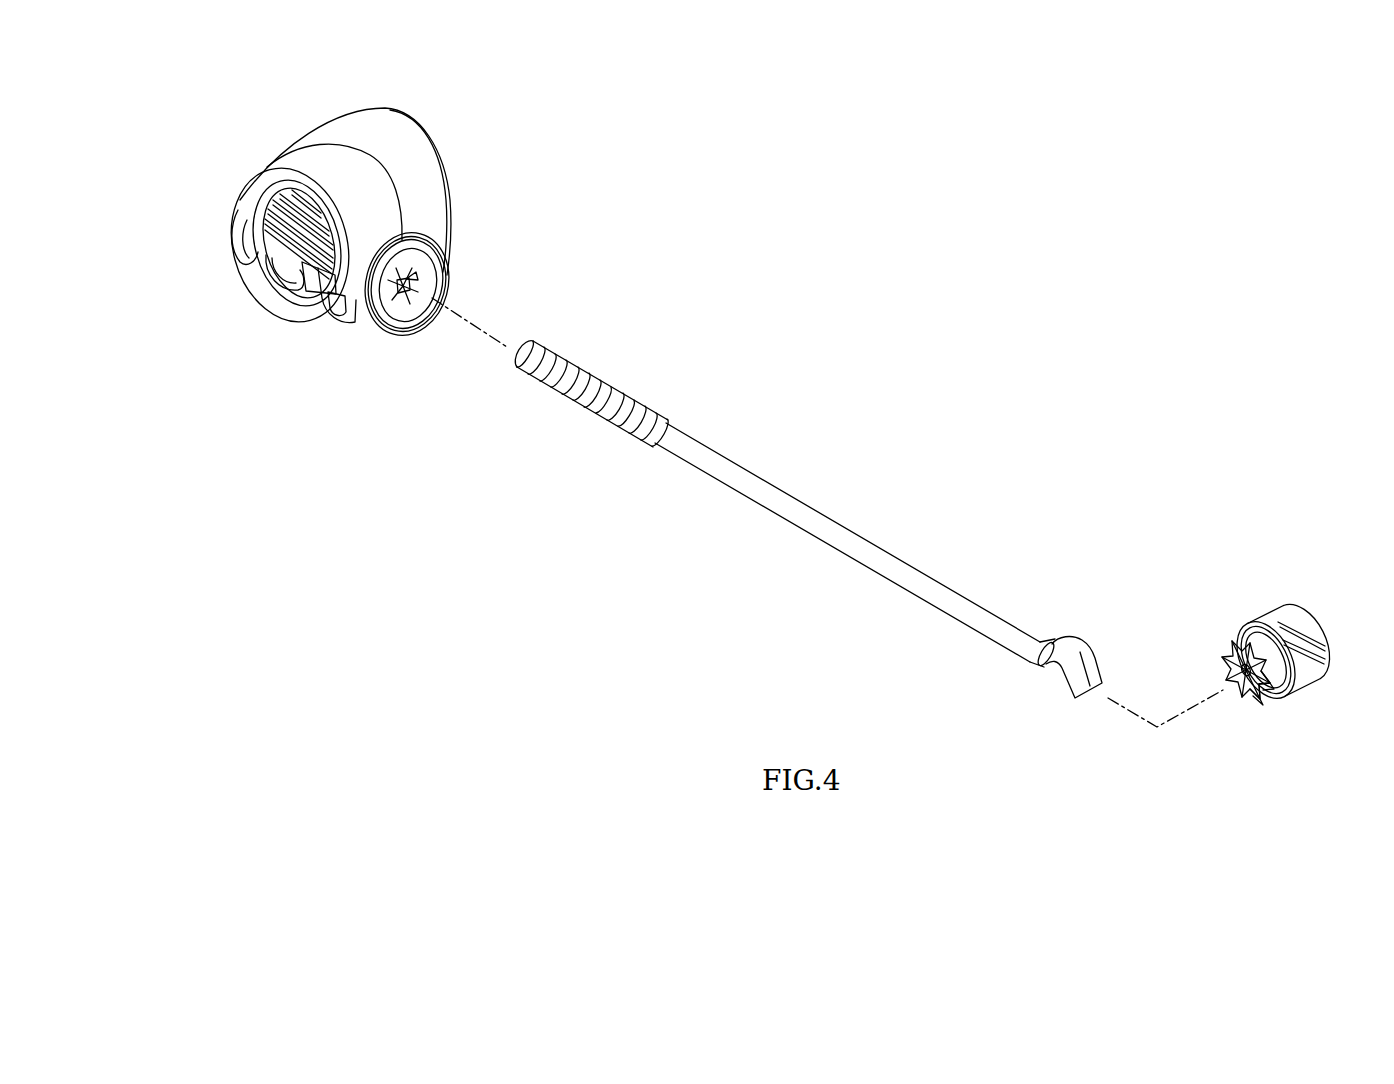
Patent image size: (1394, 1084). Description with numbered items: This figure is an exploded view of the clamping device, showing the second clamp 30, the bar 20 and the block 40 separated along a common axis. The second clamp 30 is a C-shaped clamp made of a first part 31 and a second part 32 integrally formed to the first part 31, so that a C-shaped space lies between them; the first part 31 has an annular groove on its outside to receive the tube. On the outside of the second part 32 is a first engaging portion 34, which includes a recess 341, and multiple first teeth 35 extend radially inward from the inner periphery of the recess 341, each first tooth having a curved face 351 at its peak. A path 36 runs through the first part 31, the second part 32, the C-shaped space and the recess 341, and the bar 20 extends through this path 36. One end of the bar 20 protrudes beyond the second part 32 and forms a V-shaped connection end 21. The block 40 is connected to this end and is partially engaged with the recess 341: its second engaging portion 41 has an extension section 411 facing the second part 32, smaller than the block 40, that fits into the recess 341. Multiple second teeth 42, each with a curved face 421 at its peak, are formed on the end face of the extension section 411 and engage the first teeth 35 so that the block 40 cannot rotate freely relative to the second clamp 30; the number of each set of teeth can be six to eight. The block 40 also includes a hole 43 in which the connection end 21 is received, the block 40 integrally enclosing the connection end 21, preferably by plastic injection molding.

The bar 20 is at (797, 508).
The connection end 21 is at (1070, 648).
The second clamp 30 is at (347, 123).
The first part 31 is at (240, 250).
The second part 32 is at (332, 314).
The first engaging portion 34 is at (350, 326).
The recess 341 is at (428, 274).
The first teeth 35 is at (387, 300).
The curved face 351 is at (413, 291).
The path 36 is at (403, 232).
The block 40 is at (1313, 605).
The second engaging portion 41 is at (1220, 640).
The extension section 411 is at (1282, 675).
The second teeth 42 is at (1252, 705).
The curved face 421 is at (1265, 703).
The hole 43 is at (1240, 690).